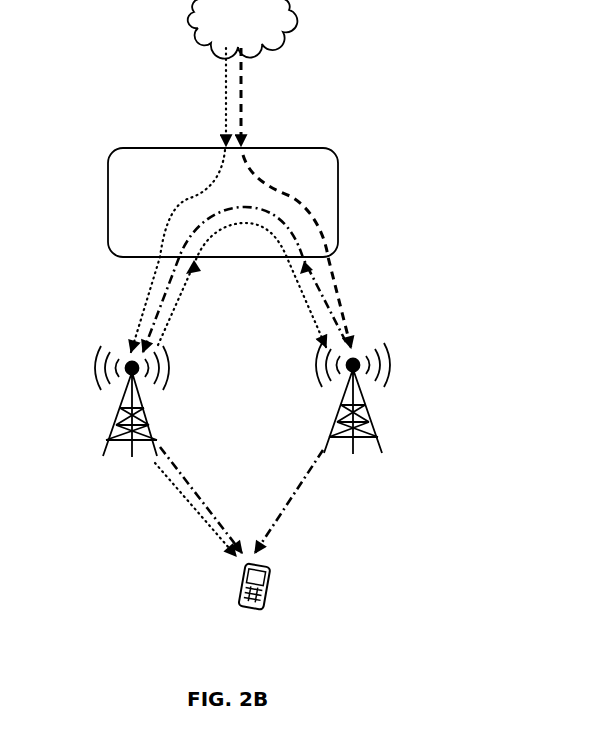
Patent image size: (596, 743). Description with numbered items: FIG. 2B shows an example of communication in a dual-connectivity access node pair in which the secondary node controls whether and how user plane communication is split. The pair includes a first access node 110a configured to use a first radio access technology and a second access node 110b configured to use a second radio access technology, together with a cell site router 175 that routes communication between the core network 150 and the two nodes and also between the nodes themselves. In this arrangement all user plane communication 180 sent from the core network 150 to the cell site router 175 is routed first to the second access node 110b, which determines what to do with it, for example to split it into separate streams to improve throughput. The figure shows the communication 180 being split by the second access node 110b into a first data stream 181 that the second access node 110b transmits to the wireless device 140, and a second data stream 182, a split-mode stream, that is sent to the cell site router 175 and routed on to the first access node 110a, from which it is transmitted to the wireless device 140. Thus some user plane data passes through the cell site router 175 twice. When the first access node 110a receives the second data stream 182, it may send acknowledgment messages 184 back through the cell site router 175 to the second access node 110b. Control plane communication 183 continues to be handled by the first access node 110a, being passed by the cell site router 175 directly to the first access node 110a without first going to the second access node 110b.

The core network 150 is at (257, 29).
The cell site router 175 is at (148, 224).
The user plane communication 180 is at (244, 118).
The first data stream 181 is at (287, 503).
The second data stream 182 is at (320, 290).
The control plane communication 183 is at (228, 74).
The acknowledgment messages 184 is at (176, 308).
The first access node 110a is at (110, 446).
The second access node 110b is at (383, 438).
The wireless device 140 is at (243, 585).